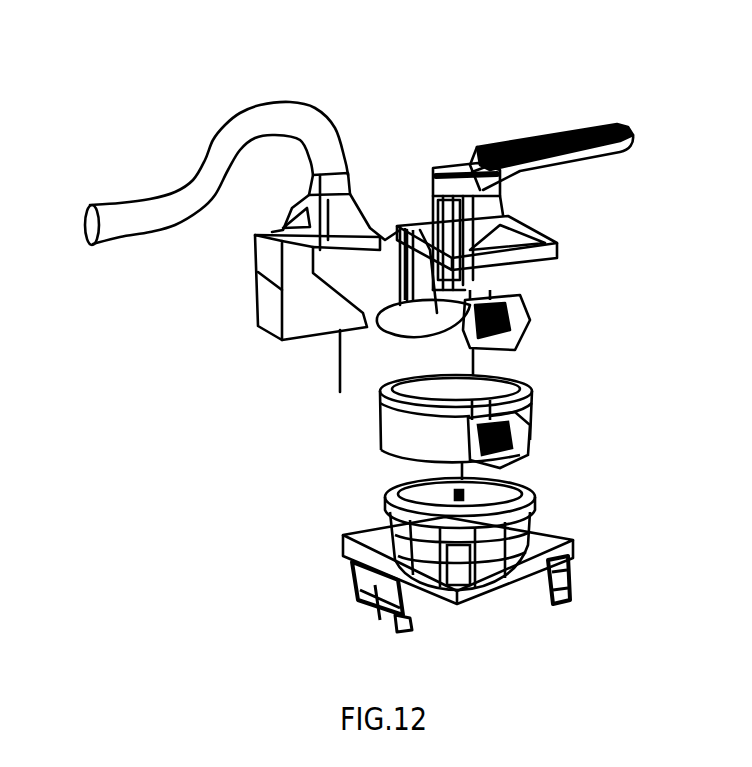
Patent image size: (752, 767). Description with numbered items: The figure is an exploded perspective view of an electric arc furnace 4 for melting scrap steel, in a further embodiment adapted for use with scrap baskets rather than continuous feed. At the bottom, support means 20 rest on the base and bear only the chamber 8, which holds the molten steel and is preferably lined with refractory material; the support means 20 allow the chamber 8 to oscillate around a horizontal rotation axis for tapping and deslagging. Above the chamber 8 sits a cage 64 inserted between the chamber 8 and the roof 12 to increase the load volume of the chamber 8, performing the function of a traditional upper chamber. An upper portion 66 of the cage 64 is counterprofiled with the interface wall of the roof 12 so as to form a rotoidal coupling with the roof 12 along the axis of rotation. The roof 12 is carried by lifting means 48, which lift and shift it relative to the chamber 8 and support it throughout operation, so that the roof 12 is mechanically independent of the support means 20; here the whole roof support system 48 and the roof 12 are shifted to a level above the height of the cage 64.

The electric arc furnace 4 is at (532, 108).
The lifting means 48 is at (545, 241).
The roof 12 is at (525, 305).
The upper portion 66 is at (530, 389).
The cage 64 is at (530, 425).
The chamber 8 is at (527, 500).
The support means 20 is at (345, 548).